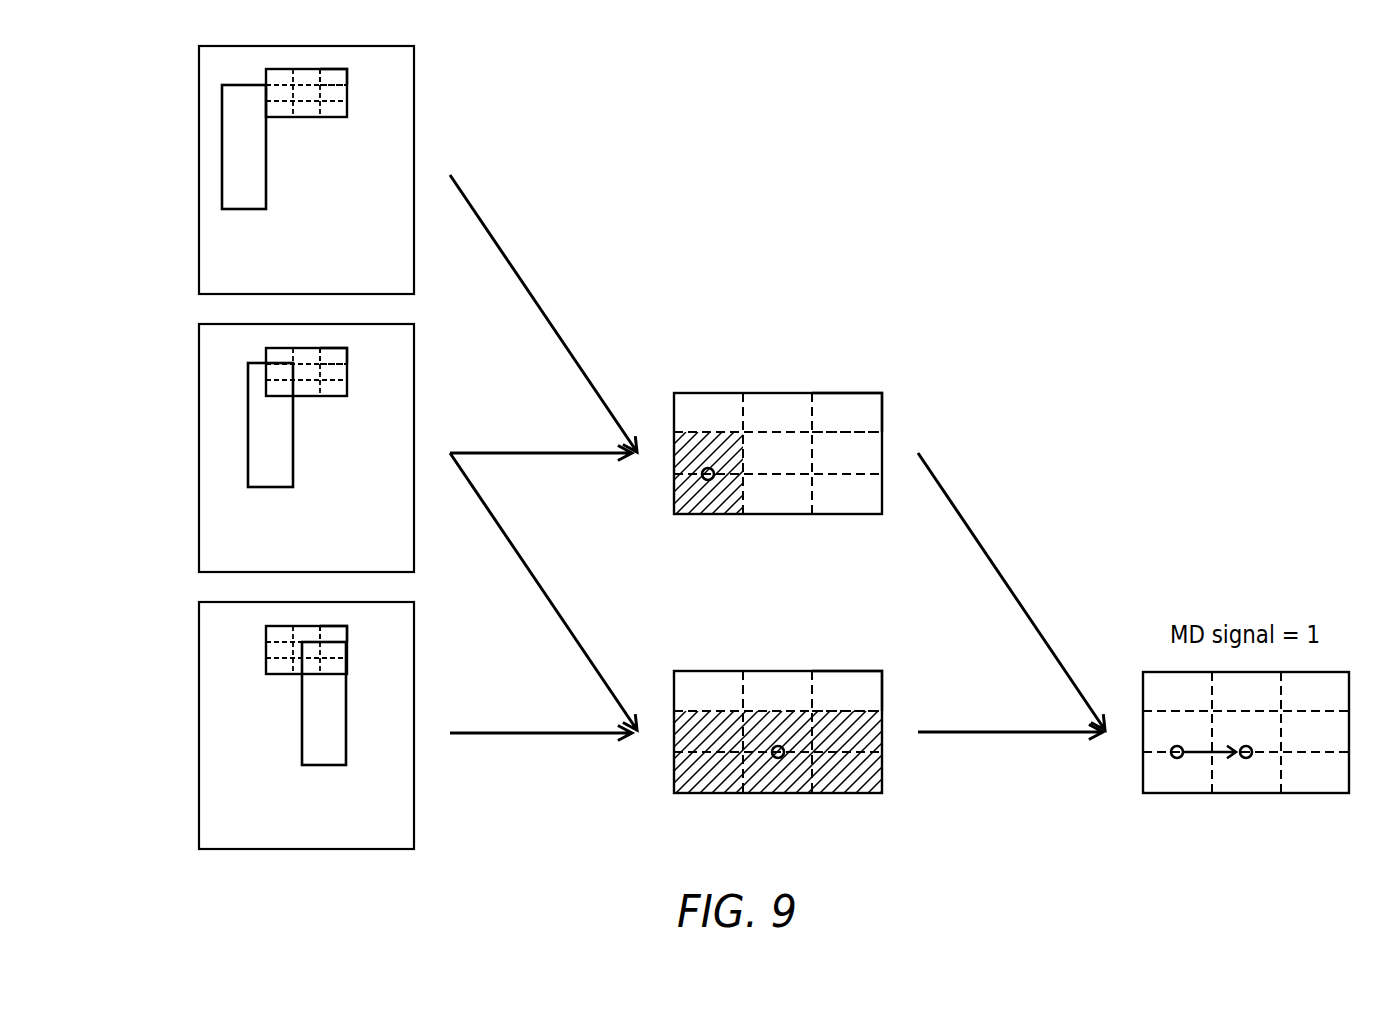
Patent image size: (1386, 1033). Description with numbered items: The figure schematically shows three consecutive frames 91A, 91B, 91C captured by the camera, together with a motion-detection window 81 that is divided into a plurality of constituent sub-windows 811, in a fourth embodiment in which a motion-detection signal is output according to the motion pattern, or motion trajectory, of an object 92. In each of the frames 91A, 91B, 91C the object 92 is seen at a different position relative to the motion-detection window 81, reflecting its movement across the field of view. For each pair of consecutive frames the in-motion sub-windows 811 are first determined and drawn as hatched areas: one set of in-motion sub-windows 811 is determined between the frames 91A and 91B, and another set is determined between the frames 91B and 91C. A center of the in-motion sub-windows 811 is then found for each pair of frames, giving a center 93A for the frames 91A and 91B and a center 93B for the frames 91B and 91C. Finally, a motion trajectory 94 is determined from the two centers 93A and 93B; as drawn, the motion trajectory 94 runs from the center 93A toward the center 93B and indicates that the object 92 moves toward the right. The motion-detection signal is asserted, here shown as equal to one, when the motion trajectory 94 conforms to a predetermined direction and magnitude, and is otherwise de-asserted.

The frame 91A is at (199, 260).
The frame 91B is at (199, 538).
The frame 91C is at (199, 817).
The motion-detection window 81 is at (325, 117).
The sub-window 811 is at (337, 78).
The object 92 is at (244, 209).
The center 93A is at (708, 480).
The center 93B is at (778, 758).
The motion trajectory 94 is at (1200, 755).